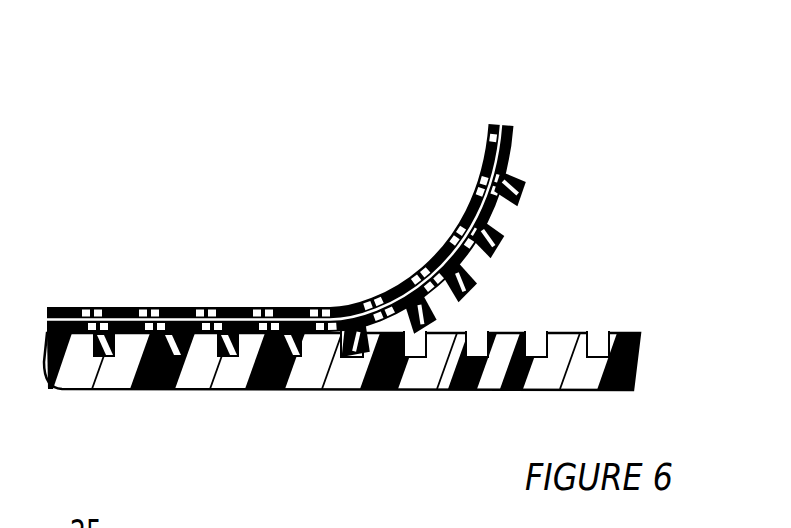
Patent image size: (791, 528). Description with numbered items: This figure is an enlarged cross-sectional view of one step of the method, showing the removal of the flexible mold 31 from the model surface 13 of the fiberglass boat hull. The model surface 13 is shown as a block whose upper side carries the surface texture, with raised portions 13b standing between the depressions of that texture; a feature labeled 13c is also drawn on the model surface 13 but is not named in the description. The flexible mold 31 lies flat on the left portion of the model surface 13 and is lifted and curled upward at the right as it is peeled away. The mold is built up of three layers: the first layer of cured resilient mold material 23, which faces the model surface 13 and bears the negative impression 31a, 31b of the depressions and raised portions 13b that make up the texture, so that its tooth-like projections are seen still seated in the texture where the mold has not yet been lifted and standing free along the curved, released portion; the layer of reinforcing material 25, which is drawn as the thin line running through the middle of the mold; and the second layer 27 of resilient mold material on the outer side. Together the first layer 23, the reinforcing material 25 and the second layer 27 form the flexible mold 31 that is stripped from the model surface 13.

The model surface 13 is at (590, 390).
The raised portions 13b is at (567, 333).
The slot 13c is at (598, 350).
The first layer of cured resilient mold material 23 is at (477, 228).
The layer of reinforcing material 25 is at (505, 124).
The second layer of resilient mold material 27 is at (490, 124).
The flexible mold 31 is at (330, 197).
The negative impression 31a is at (508, 232).
The negative impression 31b is at (481, 250).